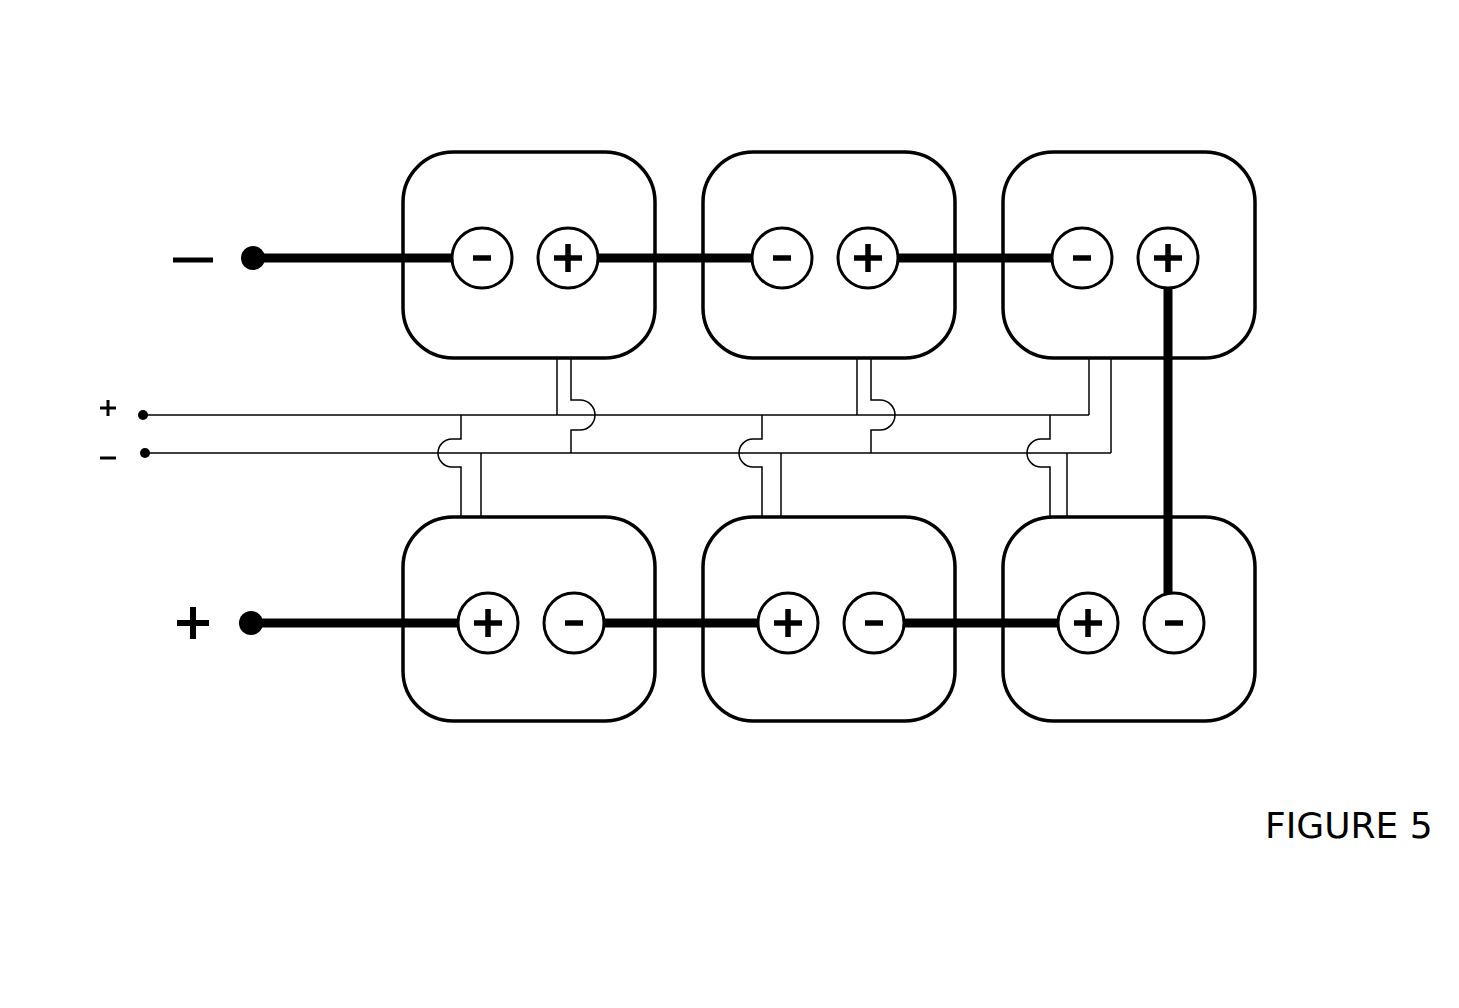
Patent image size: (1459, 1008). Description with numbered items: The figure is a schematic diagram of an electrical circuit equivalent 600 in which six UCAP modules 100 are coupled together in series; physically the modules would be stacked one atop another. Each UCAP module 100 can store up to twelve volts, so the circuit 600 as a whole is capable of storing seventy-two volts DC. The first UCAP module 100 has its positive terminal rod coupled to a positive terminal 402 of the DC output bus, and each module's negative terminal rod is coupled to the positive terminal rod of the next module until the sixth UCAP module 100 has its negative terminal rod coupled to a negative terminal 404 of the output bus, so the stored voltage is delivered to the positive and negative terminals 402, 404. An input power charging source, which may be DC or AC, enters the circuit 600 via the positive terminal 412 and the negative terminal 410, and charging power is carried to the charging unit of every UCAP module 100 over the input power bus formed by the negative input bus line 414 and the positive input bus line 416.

The UCAP module 100 is at (813, 455).
The positive terminal 402 is at (251, 635).
The negative terminal 404 is at (244, 246).
The negative terminal 410 is at (145, 455).
The positive terminal 412 is at (143, 413).
The negative input bus line 414 is at (256, 453).
The positive input bus line 416 is at (277, 415).
The electrical circuit equivalent 600 is at (803, 823).